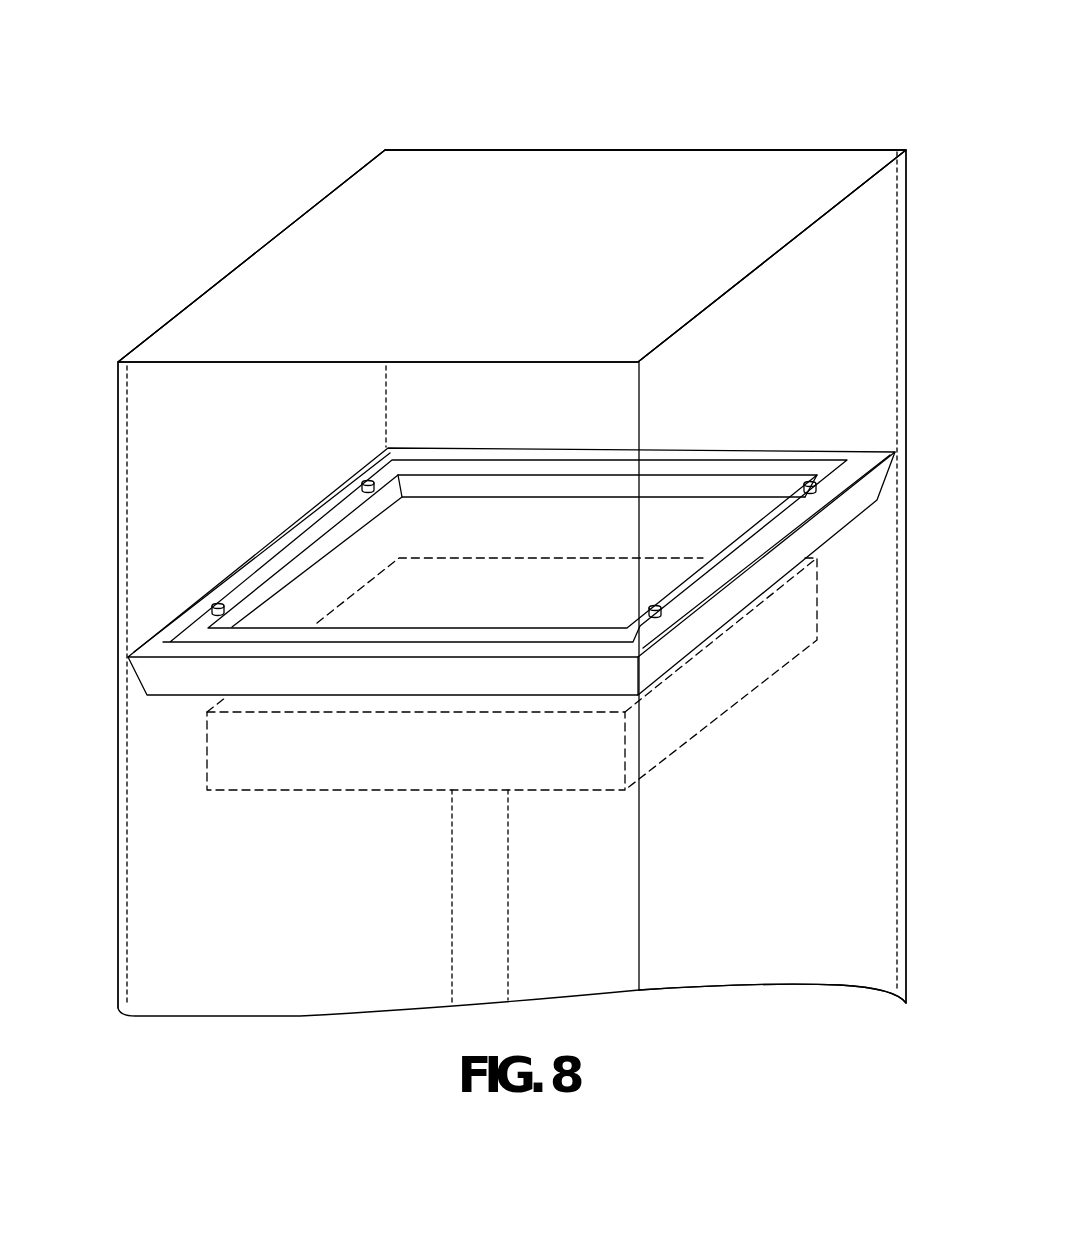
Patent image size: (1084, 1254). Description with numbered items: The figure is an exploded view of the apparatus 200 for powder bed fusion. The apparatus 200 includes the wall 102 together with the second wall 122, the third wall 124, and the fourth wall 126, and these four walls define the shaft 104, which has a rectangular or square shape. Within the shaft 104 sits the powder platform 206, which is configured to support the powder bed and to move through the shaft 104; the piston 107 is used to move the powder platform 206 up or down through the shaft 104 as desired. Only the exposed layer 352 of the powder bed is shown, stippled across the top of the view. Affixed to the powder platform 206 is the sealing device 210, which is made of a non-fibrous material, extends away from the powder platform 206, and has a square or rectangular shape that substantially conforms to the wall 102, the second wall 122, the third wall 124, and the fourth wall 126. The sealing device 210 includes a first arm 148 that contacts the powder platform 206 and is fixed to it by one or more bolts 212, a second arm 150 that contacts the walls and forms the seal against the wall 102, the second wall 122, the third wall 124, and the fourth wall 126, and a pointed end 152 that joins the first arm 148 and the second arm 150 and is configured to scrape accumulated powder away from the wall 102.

The apparatus 200 is at (771, 95).
The wall 102 is at (887, 318).
The shaft 104 is at (798, 956).
The piston 107 is at (490, 925).
The second wall 122 is at (625, 840).
The third wall 124 is at (118, 458).
The fourth wall 126 is at (686, 150).
The exposed layer 352 is at (543, 170).
The first arm 148 is at (188, 637).
The second arm 150 is at (343, 658).
The pointed end 152 is at (150, 696).
The powder platform 206 is at (468, 578).
The sealing device 210 is at (305, 687).
The bolts 212 is at (372, 480).